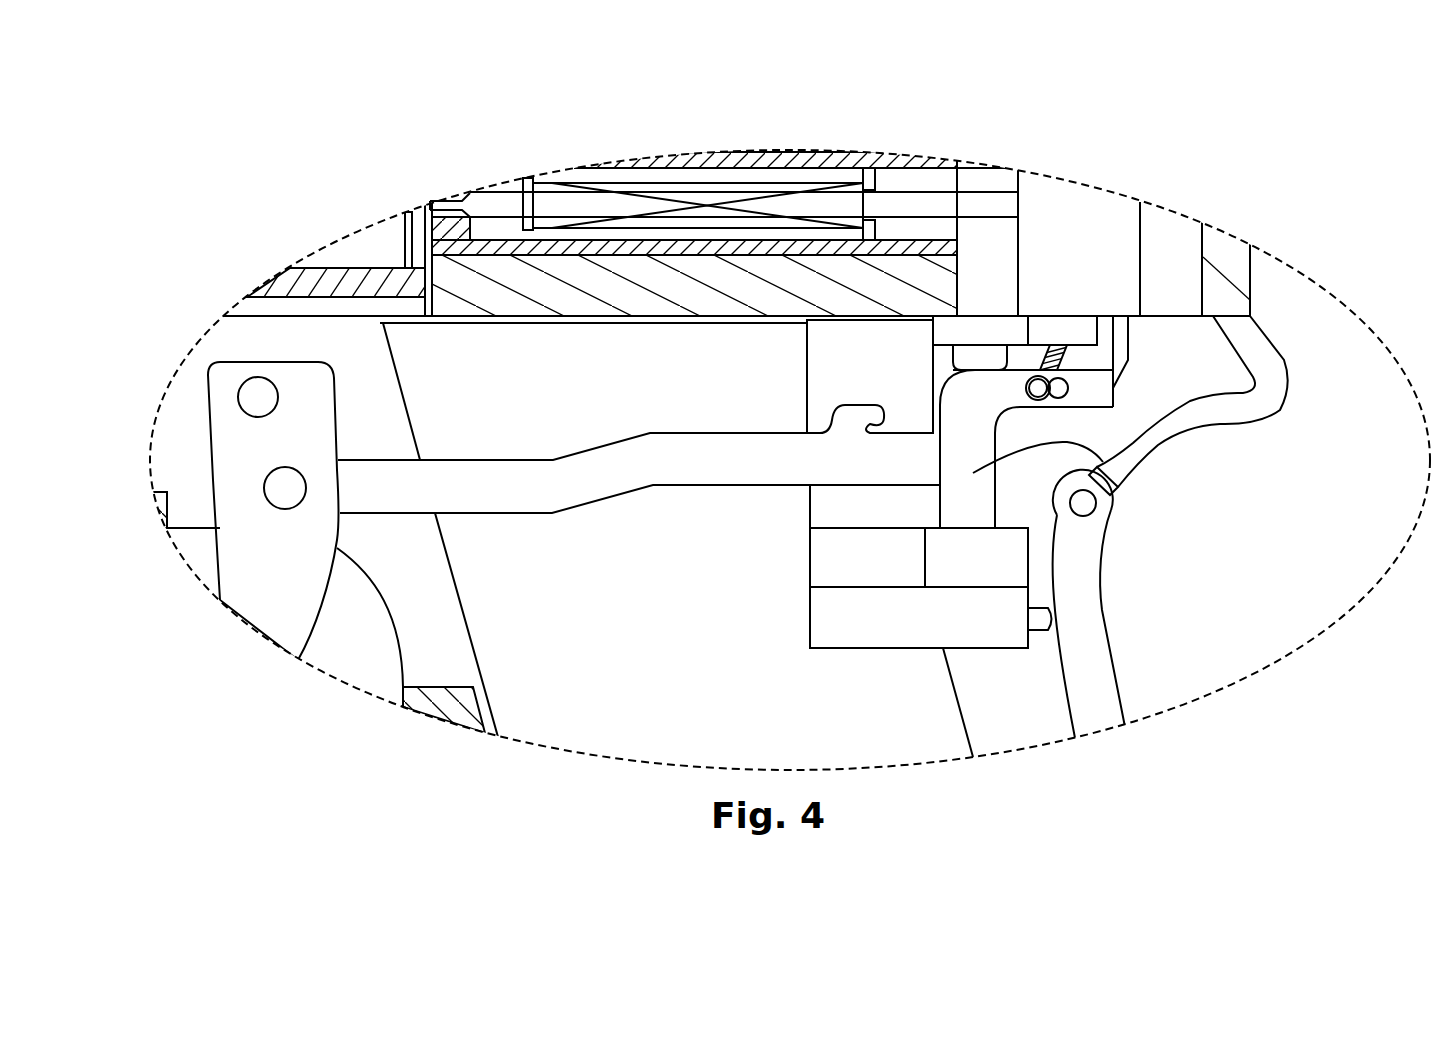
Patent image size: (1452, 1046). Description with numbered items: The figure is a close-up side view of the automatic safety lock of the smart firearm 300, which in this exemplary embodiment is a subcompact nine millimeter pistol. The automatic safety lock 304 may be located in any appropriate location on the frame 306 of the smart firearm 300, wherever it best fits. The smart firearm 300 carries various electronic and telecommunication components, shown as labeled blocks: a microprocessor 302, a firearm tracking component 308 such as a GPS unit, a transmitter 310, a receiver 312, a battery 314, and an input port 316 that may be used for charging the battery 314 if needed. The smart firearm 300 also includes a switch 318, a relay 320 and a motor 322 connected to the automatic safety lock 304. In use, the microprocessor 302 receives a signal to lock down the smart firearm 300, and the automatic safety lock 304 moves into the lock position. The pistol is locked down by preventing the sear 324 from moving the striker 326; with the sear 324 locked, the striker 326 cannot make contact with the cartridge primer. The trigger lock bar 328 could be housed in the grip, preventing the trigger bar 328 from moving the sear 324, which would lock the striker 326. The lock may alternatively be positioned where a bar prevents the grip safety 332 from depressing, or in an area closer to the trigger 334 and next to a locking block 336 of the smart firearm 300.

The smart firearm component 300 is at (1177, 134).
The microprocessor 302 is at (840, 372).
The automatic safety lock 304 is at (1067, 357).
The frame 306 is at (453, 665).
The firearm tracking component 308 is at (852, 522).
The transmitter 310 is at (951, 571).
The receiver 312 is at (847, 571).
The battery 314 is at (899, 634).
The input port 316 is at (1047, 618).
The switch 318 is at (965, 333).
The relay 320 is at (978, 360).
The motor 322 is at (1073, 333).
The sear 324 is at (1132, 462).
The striker 326 is at (765, 203).
The trigger lock bar 328 is at (615, 463).
The grip safety 332 is at (1087, 677).
The trigger 334 is at (280, 592).
The locking block 336 is at (187, 443).